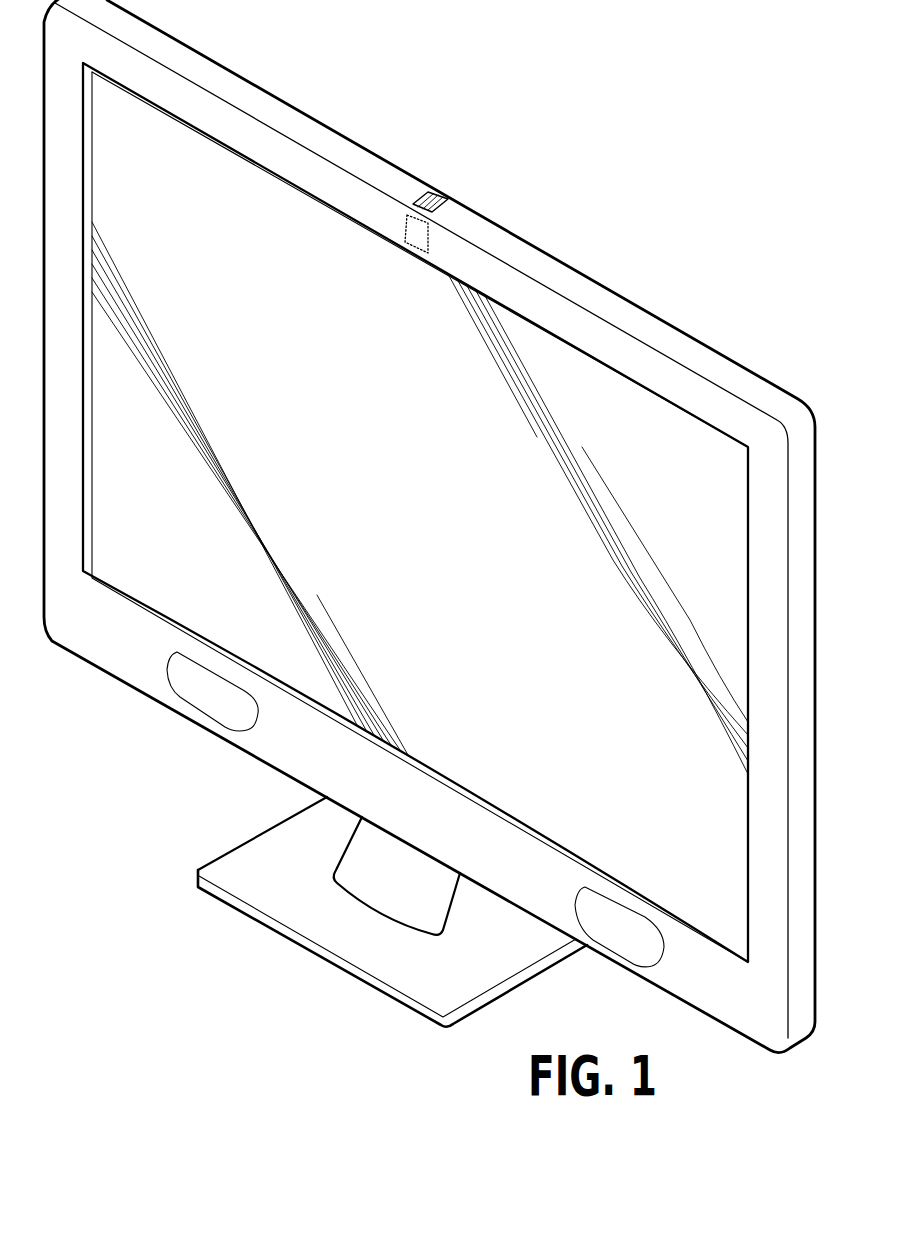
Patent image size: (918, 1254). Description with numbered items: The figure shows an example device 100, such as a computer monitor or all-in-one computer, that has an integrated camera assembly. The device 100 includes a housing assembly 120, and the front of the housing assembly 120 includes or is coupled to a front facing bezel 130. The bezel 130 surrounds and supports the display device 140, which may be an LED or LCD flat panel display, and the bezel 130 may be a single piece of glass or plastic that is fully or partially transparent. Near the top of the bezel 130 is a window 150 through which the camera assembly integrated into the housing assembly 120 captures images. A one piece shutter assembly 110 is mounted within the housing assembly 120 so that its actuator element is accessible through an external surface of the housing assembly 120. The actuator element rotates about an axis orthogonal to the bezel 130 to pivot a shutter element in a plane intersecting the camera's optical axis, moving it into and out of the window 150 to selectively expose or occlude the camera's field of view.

The device 100 is at (429, 526).
The shutter assembly 110 is at (443, 191).
The housing assembly 120 is at (603, 287).
The front facing bezel 130 is at (762, 525).
The display device 140 is at (442, 506).
The window 150 is at (417, 238).